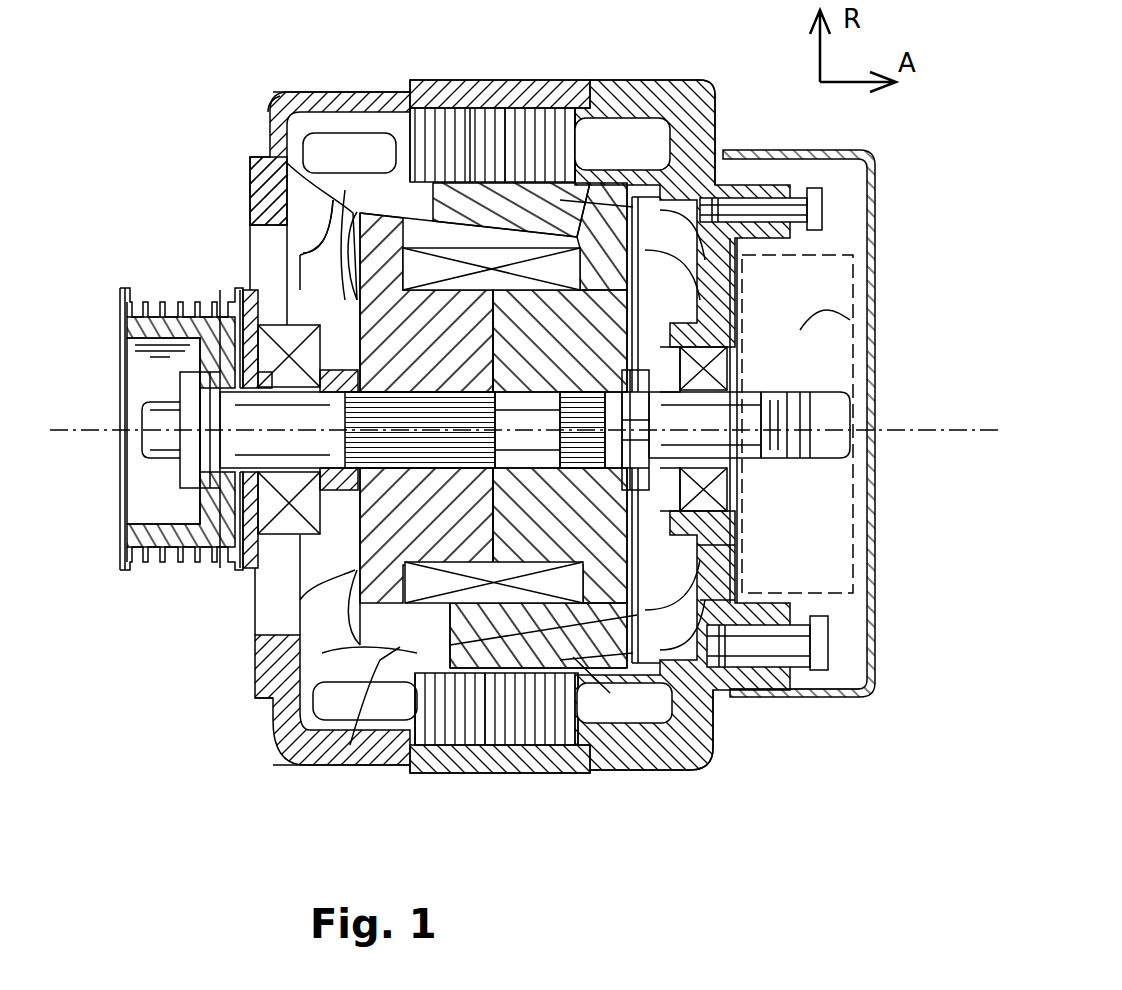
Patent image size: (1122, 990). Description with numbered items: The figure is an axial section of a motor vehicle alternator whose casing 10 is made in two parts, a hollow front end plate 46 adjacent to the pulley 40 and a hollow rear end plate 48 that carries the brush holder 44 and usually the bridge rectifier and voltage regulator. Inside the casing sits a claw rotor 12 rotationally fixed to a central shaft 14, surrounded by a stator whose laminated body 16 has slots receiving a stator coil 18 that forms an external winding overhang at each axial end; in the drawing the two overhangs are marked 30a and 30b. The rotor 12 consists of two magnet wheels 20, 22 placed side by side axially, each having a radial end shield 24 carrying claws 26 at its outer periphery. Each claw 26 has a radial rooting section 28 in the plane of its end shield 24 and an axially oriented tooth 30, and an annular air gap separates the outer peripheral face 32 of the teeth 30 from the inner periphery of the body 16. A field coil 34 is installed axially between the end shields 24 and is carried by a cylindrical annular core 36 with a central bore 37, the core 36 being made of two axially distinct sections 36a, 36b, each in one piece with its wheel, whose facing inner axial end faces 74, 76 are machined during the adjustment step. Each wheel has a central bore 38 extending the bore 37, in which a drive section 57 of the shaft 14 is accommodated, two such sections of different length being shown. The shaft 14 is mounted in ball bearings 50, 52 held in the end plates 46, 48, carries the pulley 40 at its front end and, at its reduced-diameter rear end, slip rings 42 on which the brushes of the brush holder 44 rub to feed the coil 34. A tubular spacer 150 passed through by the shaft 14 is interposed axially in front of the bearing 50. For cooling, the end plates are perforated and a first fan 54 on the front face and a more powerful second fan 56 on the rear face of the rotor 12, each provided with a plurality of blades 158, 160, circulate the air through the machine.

The casing 10 is at (287, 90).
The claw rotor 12 is at (400, 213).
The central shaft 14 is at (745, 383).
The stator body 16 is at (543, 127).
The stator coil 18 is at (630, 147).
The magnet wheel 20 is at (307, 592).
The magnet wheel 22 is at (720, 577).
The radial end shield 24 is at (367, 290).
The claws 26 is at (740, 178).
The rooting section 28 is at (738, 290).
The tooth 30 is at (445, 195).
The front winding overhang 30a is at (438, 192).
The rear winding overhang 30b is at (560, 200).
The outer peripheral face 32 is at (507, 197).
The field coil 34 is at (403, 647).
The core 36 is at (255, 688).
The core section 36a is at (610, 693).
The core section 36b is at (483, 610).
The central bore 37 is at (545, 410).
The central bore 38 is at (403, 413).
The pulley 40 is at (157, 348).
The slip rings 42 is at (825, 433).
The brush holder 44 is at (825, 320).
The front end plate 46 is at (267, 193).
The rear end plate 48 is at (717, 530).
The ball bearing 50 is at (270, 500).
The ball bearing 52 is at (713, 478).
The first fan 54 is at (273, 125).
The second fan 56 is at (712, 720).
The drive section 57 is at (760, 384).
The inner axial end face 74 is at (490, 342).
The inner axial end face 76 is at (493, 352).
The tubular spacer 150 is at (348, 578).
The blades 158 is at (303, 253).
The blades 160 is at (768, 703).